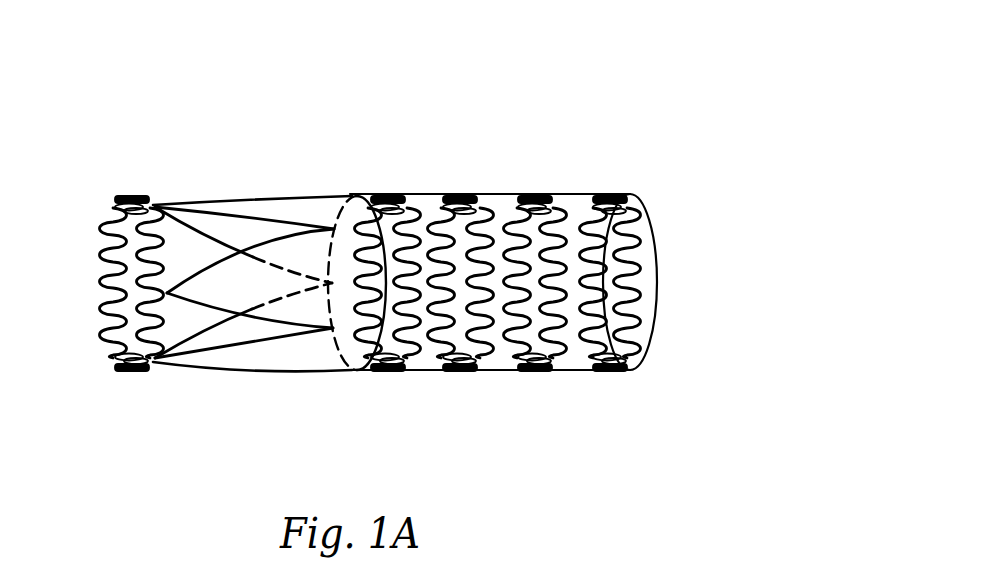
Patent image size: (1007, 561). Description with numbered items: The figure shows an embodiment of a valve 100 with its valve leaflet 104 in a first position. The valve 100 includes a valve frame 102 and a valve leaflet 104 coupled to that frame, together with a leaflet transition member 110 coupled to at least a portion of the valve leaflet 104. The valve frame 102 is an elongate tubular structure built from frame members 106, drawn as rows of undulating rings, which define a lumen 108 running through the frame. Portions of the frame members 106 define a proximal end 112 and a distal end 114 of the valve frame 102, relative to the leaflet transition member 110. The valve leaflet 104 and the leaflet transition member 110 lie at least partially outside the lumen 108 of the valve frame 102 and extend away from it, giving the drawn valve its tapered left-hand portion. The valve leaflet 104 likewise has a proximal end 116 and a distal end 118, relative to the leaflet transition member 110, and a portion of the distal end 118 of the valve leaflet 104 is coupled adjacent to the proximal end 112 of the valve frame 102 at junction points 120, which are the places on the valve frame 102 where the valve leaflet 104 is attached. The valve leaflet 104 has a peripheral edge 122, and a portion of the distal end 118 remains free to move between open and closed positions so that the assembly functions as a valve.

The valve 100 is at (619, 60).
The valve frame 102 is at (632, 198).
The valve leaflet 104 is at (278, 198).
The frame members 106 is at (483, 218).
The lumen 108 is at (674, 274).
The leaflet transition member 110 is at (106, 219).
The proximal end 112 is at (364, 172).
The distal end 114 is at (637, 172).
The proximal end 116 is at (121, 380).
The distal end 118 is at (336, 390).
The junction points 120 is at (378, 212).
The peripheral edge 122 is at (207, 216).